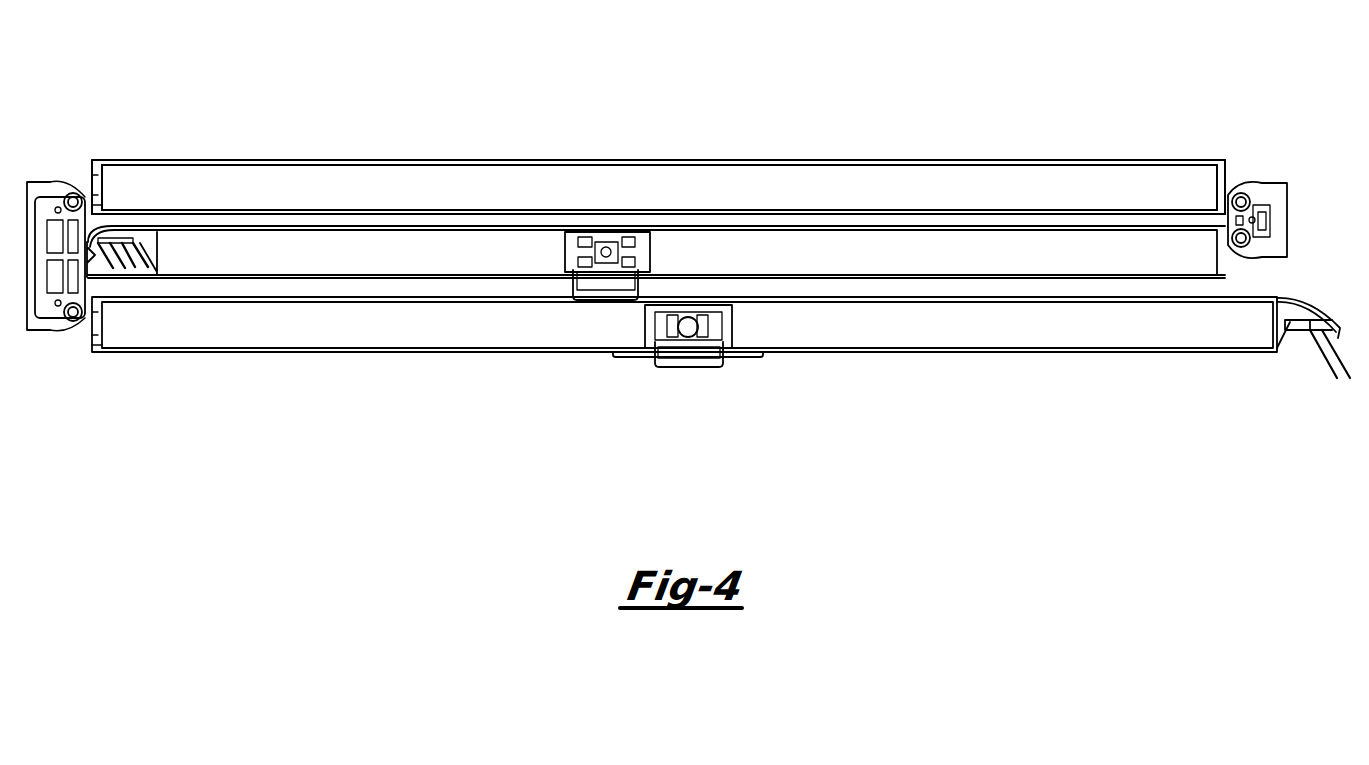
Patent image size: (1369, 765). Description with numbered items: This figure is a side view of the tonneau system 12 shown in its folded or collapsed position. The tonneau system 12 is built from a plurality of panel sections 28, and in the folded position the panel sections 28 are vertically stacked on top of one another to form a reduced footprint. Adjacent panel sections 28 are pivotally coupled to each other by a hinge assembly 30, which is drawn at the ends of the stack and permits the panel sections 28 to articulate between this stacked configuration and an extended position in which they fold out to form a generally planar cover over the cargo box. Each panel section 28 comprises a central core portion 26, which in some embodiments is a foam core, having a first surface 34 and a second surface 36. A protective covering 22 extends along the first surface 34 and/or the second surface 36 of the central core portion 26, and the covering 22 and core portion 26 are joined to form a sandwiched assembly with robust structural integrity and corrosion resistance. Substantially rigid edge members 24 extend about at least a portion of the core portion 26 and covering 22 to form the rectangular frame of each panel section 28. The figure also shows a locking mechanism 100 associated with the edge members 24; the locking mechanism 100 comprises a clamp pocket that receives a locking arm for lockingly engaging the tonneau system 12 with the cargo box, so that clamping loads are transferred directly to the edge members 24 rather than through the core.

The tonneau system 12 is at (938, 76).
The protective covering 22 is at (1044, 159).
The edge member 24 is at (1316, 300).
The central core portion 26 is at (934, 200).
The panel section 28 is at (339, 214).
The hinge assembly 30 is at (74, 167).
The first surface 34 is at (817, 159).
The second surface 36 is at (722, 216).
The locking mechanism 100 is at (582, 203).